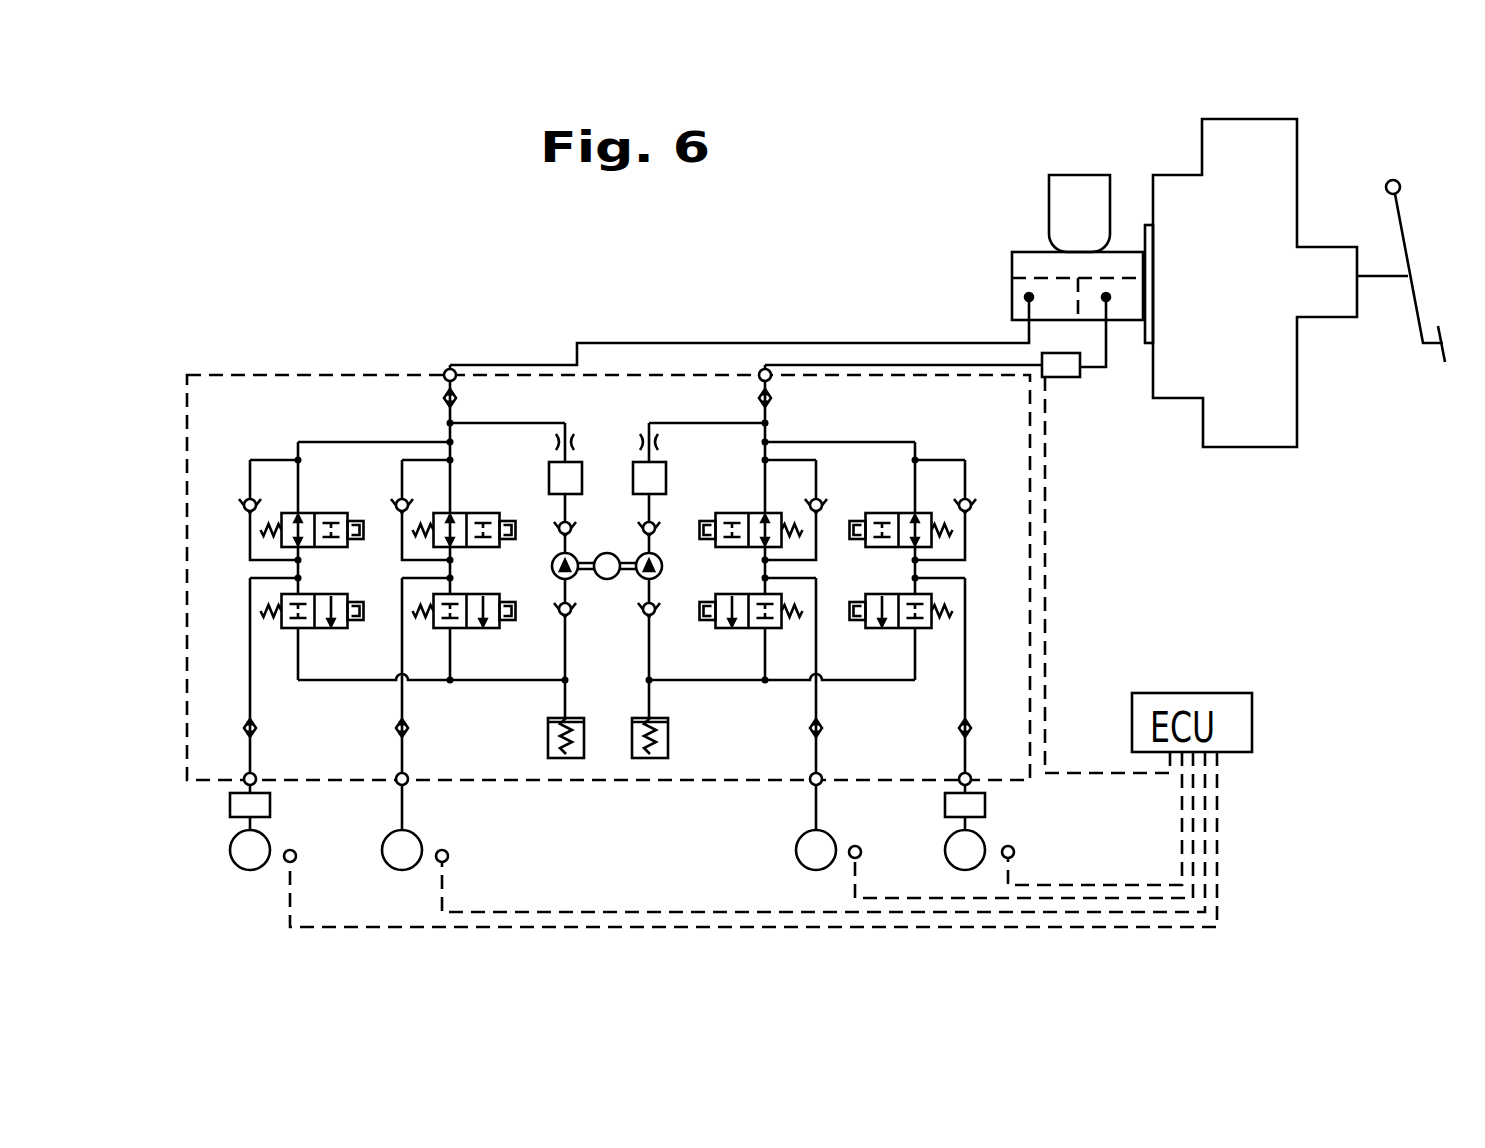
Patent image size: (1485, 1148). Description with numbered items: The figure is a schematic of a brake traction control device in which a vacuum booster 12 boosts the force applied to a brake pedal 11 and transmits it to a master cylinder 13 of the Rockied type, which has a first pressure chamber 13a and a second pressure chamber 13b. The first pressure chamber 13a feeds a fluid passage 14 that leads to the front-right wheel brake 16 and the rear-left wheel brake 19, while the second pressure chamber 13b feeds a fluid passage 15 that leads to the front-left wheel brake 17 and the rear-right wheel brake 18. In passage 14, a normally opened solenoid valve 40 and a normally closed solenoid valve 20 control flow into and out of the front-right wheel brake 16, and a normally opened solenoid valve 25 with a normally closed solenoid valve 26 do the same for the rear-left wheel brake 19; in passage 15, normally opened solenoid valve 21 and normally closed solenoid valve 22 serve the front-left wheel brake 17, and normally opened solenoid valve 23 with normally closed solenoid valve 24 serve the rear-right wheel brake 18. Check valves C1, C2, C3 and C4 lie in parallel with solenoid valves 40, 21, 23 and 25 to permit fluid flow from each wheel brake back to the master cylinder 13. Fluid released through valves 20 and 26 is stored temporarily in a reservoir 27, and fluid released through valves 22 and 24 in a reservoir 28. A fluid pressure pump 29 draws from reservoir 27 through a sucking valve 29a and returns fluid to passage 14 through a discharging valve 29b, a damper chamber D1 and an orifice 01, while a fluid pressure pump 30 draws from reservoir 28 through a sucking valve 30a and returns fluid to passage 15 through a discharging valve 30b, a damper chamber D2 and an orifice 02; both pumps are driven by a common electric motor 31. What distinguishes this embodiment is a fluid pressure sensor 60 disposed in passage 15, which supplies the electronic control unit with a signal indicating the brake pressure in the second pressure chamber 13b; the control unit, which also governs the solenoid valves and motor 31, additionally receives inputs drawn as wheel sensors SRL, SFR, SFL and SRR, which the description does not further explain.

The brake pedal 11 is at (1408, 226).
The vacuum booster 12 is at (1280, 138).
The master cylinder 13 is at (1047, 272).
The first pressure chamber 13a is at (1022, 296).
The second pressure chamber 13b is at (1123, 310).
The fluid passage 14 is at (690, 343).
The fluid passage 15 is at (1090, 368).
The front-right wheel brake 16 is at (382, 848).
The front-left wheel brake 17 is at (797, 848).
The rear-right wheel brake 18 is at (945, 848).
The rear-left wheel brake 19 is at (230, 850).
The normally closed solenoid valve 20 is at (470, 628).
The normally opened solenoid valve 21 is at (752, 515).
The normally closed solenoid valve 22 is at (745, 630).
The normally opened solenoid valve 23 is at (905, 514).
The normally closed solenoid valve 24 is at (890, 630).
The normally opened solenoid valve 25 is at (334, 512).
The normally closed solenoid valve 26 is at (325, 628).
The reservoir 27 is at (554, 759).
The reservoir 28 is at (646, 759).
The fluid pressure pump 29 is at (552, 567).
The sucking valve 29a is at (560, 613).
The discharging valve 29b is at (558, 521).
The fluid pressure pump 30 is at (640, 578).
The sucking valve 30a is at (654, 613).
The discharging valve 30b is at (657, 522).
The electric motor 31 is at (604, 580).
The normally opened solenoid valve 40 is at (488, 512).
The fluid pressure sensor 60 is at (1062, 378).
The orifice 01 is at (574, 440).
The orifice 02 is at (642, 440).
The damper chamber D1 is at (558, 475).
The damper chamber D2 is at (665, 472).
The check valve C1 is at (402, 499).
The check valve C2 is at (819, 498).
The check valve C3 is at (968, 498).
The check valve C4 is at (246, 500).
The rear left wheel speed sensor SRL is at (296, 860).
The front right wheel speed sensor SFR is at (448, 860).
The front left wheel speed sensor SFL is at (861, 856).
The rear right wheel speed sensor SRR is at (1015, 850).